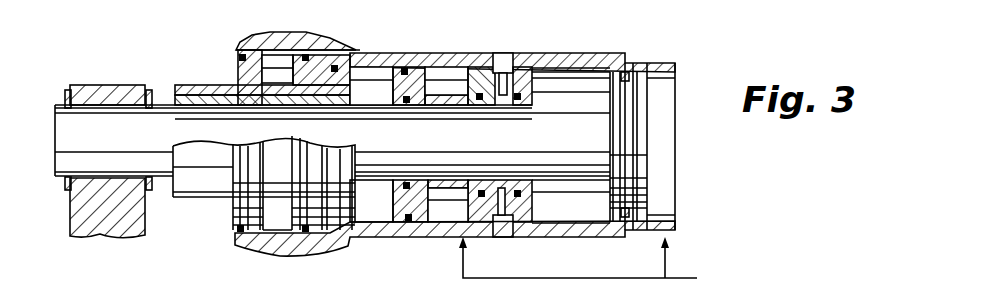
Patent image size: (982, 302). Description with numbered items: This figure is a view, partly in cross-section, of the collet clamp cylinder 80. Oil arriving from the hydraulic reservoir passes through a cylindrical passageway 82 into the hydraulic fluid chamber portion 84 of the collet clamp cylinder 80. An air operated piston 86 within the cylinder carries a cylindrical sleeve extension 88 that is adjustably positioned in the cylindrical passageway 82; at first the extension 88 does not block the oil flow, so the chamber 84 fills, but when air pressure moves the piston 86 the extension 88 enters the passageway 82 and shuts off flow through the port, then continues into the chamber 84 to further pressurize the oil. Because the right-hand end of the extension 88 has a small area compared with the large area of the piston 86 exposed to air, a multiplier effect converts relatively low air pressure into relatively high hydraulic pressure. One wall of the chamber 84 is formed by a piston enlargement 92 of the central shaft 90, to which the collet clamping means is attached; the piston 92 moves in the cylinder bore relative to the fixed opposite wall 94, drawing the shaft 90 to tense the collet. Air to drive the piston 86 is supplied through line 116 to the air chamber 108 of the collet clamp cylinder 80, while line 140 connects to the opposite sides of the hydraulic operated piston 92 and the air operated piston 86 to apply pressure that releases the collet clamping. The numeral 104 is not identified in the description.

The collet clamp cylinder 80 is at (470, 52).
The cylindrical passageway 82 is at (514, 100).
The hydraulic fluid chamber portion 84 is at (582, 205).
The air operated piston 86 is at (392, 210).
The cylindrical sleeve extension 88 is at (446, 95).
The central shaft 90 is at (150, 141).
The piston enlargement 92 is at (640, 150).
The fixed opposite wall 94 is at (538, 75).
The collar 104 is at (293, 219).
The air chamber 108 is at (365, 78).
The line 116 is at (578, 269).
The line 140 is at (596, 280).